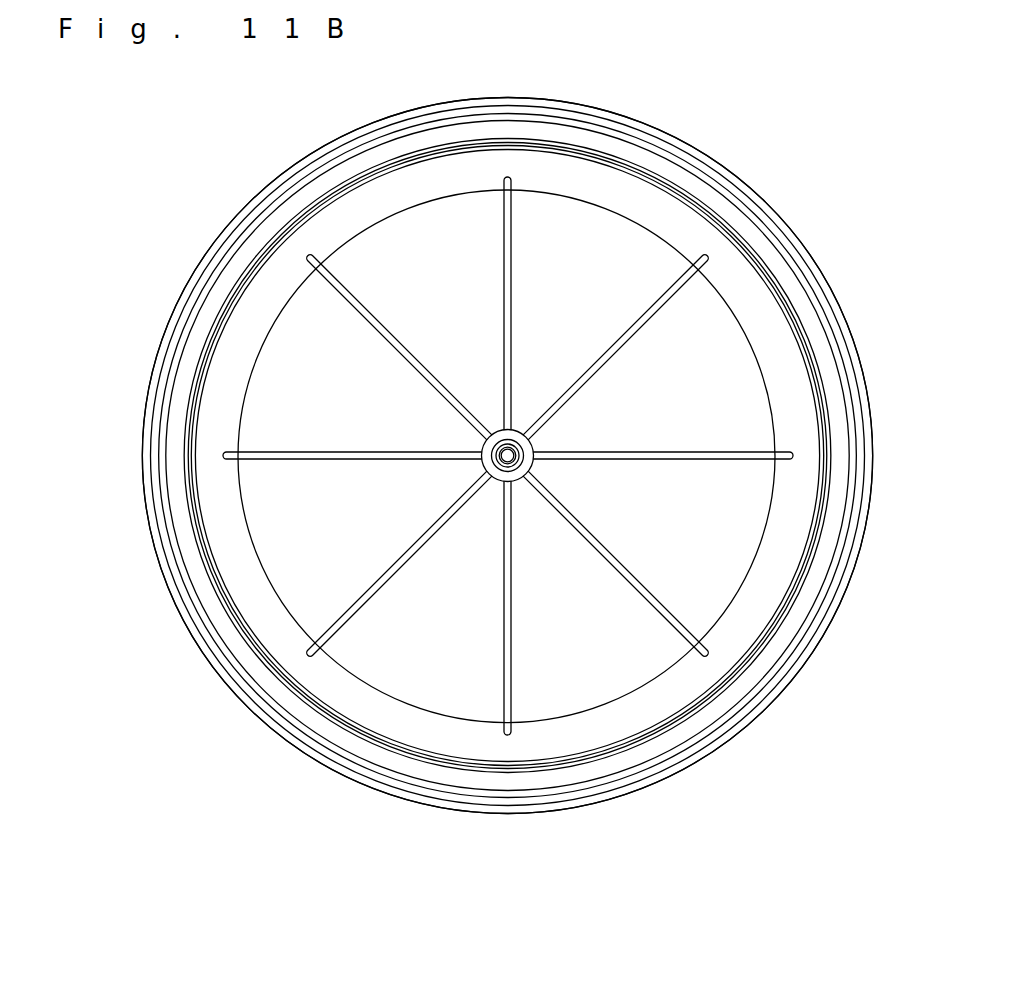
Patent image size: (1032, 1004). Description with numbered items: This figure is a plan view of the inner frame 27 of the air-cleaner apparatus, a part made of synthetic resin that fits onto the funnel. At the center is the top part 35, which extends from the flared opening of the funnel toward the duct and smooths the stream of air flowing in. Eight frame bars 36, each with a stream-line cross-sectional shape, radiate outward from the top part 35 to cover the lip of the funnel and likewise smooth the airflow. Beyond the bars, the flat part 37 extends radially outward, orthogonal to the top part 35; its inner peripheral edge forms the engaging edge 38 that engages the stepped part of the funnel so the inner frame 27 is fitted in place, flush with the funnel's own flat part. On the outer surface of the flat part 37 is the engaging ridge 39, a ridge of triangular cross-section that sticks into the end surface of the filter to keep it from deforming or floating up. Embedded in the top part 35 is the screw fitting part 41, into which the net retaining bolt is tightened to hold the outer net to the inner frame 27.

The inner frame 27 is at (783, 192).
The top part 35 is at (540, 443).
The frame bars 36 is at (517, 260).
The flat part 37 is at (808, 505).
The engaging edge 38 is at (273, 587).
The engaging ridge 39 is at (240, 640).
The screw fitting part 41 is at (535, 468).